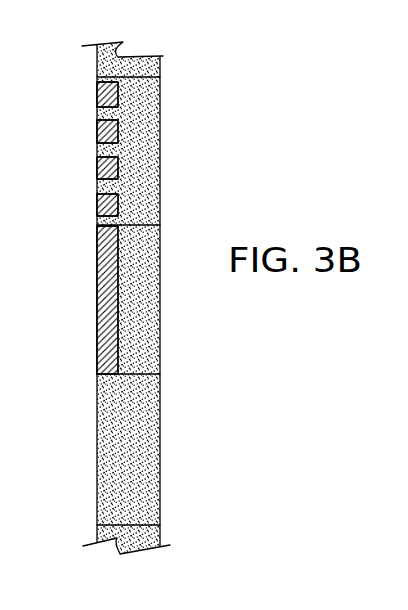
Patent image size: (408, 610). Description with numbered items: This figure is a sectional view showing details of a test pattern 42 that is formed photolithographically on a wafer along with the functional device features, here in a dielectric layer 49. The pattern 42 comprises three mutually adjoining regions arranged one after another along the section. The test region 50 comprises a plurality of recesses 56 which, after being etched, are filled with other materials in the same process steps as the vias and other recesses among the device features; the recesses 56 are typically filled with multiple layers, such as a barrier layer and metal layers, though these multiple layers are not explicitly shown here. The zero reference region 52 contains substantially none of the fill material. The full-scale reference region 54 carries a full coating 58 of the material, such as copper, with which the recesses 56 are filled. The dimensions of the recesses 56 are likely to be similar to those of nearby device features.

The pattern 42 is at (267, 55).
The dielectric layer 49 is at (137, 62).
The test region 50 is at (160, 113).
The zero reference region 52 is at (160, 482).
The full-scale reference region 54 is at (161, 287).
The recesses 56 is at (97, 98).
The full coating 58 is at (97, 308).